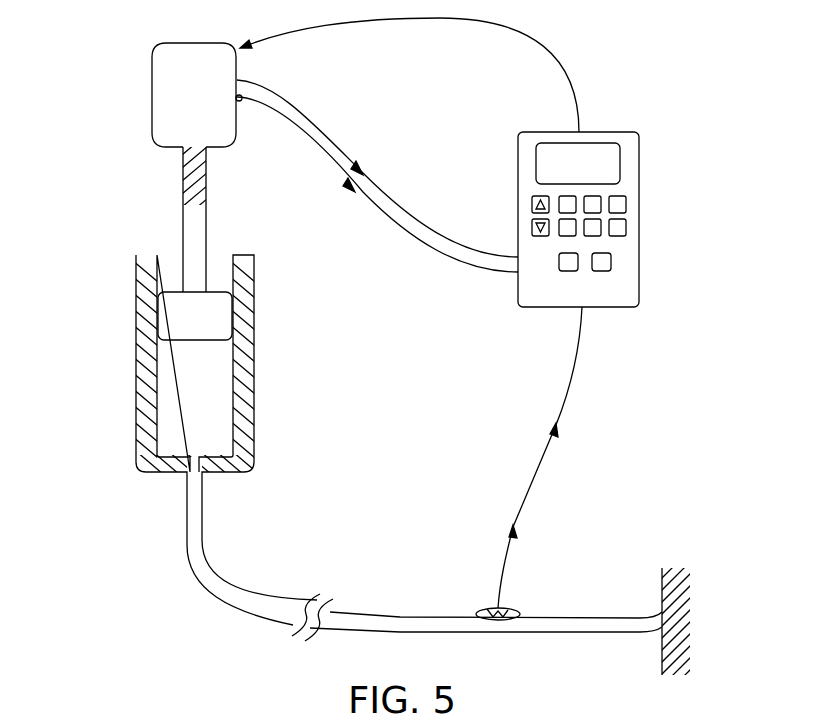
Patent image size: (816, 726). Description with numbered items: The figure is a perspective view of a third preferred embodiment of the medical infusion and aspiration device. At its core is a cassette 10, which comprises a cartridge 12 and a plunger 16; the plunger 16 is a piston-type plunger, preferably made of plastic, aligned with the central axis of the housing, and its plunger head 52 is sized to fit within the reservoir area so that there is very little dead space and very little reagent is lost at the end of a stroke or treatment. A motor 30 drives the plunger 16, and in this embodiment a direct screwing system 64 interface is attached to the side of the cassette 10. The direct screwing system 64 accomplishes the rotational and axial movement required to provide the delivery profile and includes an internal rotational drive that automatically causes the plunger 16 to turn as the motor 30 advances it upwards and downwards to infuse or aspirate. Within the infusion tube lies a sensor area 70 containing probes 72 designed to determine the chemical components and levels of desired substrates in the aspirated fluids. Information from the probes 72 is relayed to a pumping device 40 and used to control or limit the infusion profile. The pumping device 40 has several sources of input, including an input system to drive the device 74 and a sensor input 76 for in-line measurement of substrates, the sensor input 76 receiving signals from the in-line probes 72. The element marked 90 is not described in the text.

The cassette 10 is at (183, 365).
The cartridge 12 is at (254, 400).
The plunger 16 is at (200, 217).
The motor 30 is at (193, 48).
The pumping device 40 is at (637, 204).
The plunger head 52 is at (220, 315).
The direct screwing system 64 is at (208, 178).
The sensor area 70 is at (508, 611).
The probes 72 is at (492, 611).
The input system to drive the device 74 is at (514, 236).
The sensor input 76 is at (582, 310).
The patient tissue wall 90 is at (662, 590).